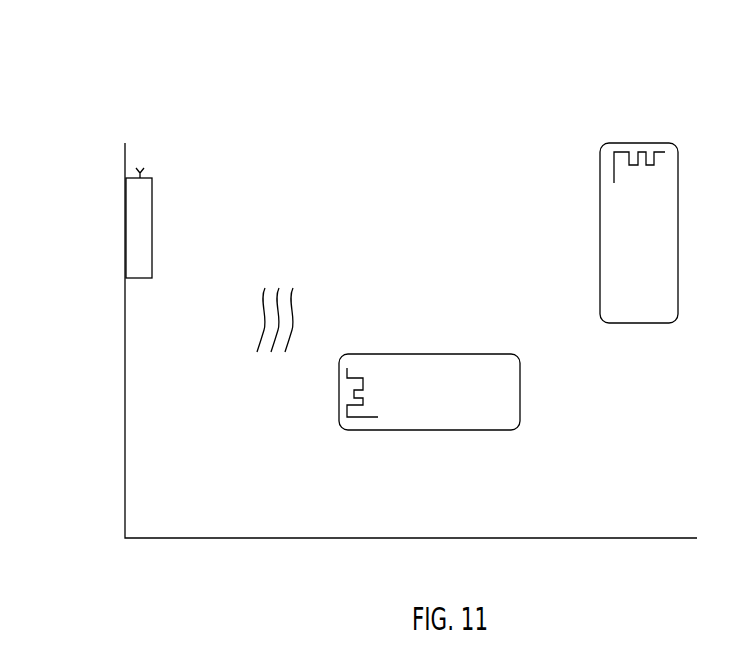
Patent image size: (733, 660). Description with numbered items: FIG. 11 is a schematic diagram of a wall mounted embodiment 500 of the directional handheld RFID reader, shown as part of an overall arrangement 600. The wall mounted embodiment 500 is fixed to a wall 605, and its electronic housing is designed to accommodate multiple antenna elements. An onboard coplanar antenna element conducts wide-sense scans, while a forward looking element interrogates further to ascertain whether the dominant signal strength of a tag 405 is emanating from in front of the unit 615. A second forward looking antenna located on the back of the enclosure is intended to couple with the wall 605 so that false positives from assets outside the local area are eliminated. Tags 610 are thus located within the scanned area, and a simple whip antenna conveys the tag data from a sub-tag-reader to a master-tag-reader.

The environment / system 600 is at (187, 93).
The wall 605 is at (122, 353).
The wall mounted embodiment of the directional reader 500 is at (138, 230).
The unit 615 is at (297, 303).
The tag 405 is at (486, 382).
The tag devices 610 is at (647, 329).